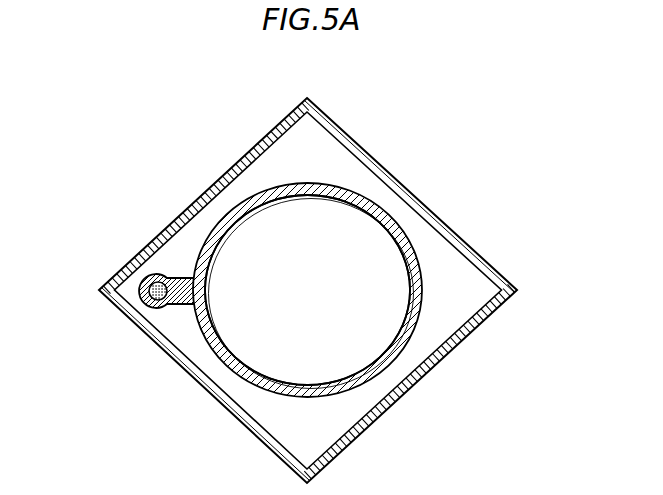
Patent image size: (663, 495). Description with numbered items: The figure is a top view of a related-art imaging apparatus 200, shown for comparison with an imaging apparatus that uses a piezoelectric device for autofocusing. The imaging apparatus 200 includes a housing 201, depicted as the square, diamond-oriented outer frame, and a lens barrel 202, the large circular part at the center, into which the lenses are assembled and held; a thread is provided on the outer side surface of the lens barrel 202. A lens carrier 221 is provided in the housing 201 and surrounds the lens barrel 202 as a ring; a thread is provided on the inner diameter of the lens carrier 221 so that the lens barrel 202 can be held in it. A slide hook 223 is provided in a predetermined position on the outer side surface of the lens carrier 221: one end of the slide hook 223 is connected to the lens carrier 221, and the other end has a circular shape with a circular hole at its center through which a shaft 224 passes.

The imaging apparatus 200 is at (317, 290).
The housing 201 is at (445, 223).
The lens barrel 202 is at (373, 323).
The lens carrier 221 is at (380, 368).
The slide hook 223 is at (117, 302).
The shaft 224 is at (147, 282).